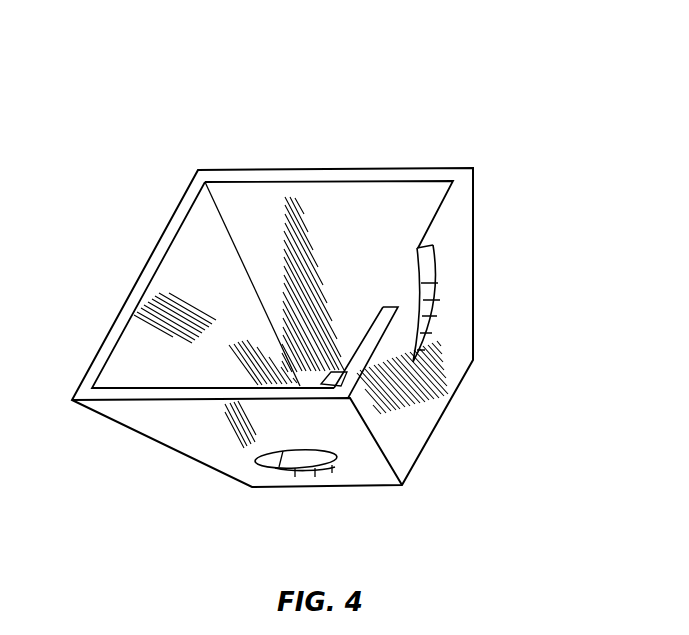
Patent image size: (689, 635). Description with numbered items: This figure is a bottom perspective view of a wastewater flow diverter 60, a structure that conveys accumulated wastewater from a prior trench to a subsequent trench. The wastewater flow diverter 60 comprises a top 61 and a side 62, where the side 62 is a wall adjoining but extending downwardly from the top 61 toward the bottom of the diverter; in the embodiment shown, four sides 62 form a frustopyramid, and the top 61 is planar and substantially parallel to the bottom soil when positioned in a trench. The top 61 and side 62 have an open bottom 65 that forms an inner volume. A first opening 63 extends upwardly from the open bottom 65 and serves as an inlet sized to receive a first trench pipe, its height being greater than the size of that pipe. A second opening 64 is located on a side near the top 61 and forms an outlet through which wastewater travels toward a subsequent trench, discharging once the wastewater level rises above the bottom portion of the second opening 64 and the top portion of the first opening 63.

The wastewater flow diverter 60 is at (358, 95).
The top 61 is at (320, 380).
The side 62 is at (389, 232).
The first opening 63 is at (410, 310).
The second opening 64 is at (283, 452).
The open bottom 65 is at (207, 317).